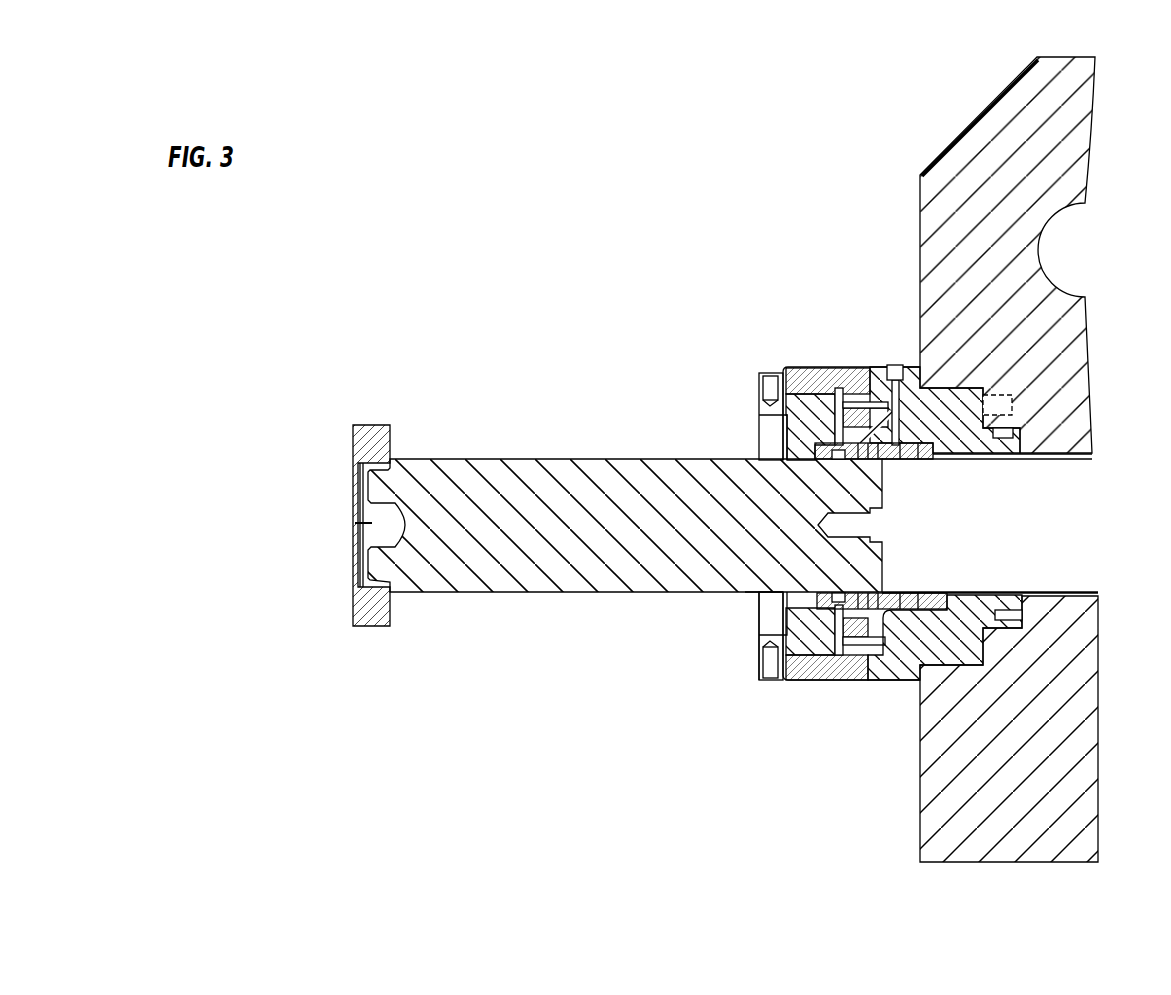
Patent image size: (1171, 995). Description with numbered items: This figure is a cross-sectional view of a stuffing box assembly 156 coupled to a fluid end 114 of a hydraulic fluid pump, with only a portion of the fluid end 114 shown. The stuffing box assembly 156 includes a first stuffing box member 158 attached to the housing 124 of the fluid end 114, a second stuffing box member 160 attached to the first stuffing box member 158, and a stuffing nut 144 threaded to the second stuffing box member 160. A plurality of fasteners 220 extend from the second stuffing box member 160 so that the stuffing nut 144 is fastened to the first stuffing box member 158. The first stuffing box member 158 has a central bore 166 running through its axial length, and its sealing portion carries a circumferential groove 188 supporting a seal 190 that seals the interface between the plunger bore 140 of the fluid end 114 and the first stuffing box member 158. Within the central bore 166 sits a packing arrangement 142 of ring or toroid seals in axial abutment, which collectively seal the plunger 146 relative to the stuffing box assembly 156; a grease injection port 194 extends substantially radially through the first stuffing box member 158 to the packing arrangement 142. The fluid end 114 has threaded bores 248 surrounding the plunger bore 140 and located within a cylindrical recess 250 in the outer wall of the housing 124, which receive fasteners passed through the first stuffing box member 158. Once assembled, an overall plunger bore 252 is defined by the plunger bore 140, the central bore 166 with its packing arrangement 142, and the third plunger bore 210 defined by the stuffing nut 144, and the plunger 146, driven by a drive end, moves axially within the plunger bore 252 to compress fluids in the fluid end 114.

The fluid end 114 is at (1007, 446).
The housing 124 is at (1085, 138).
The plunger bore 140 is at (1026, 592).
The packing arrangement 142 is at (882, 610).
The stuffing nut 144 is at (757, 627).
The plunger 146 is at (551, 458).
The stuffing box assembly 156 is at (905, 498).
The first stuffing box member 158 is at (980, 647).
The second stuffing box member 160 is at (800, 682).
The central bore 166 is at (1007, 461).
The circumferential groove 188 is at (1020, 613).
The seal 190 is at (1025, 430).
The grease injection port 194 is at (892, 363).
The third plunger bore 210 is at (800, 460).
The fasteners 220 is at (855, 660).
The threaded bores 248 is at (993, 418).
The cylindrical recess 250 is at (990, 393).
The plunger bore 252 is at (723, 621).